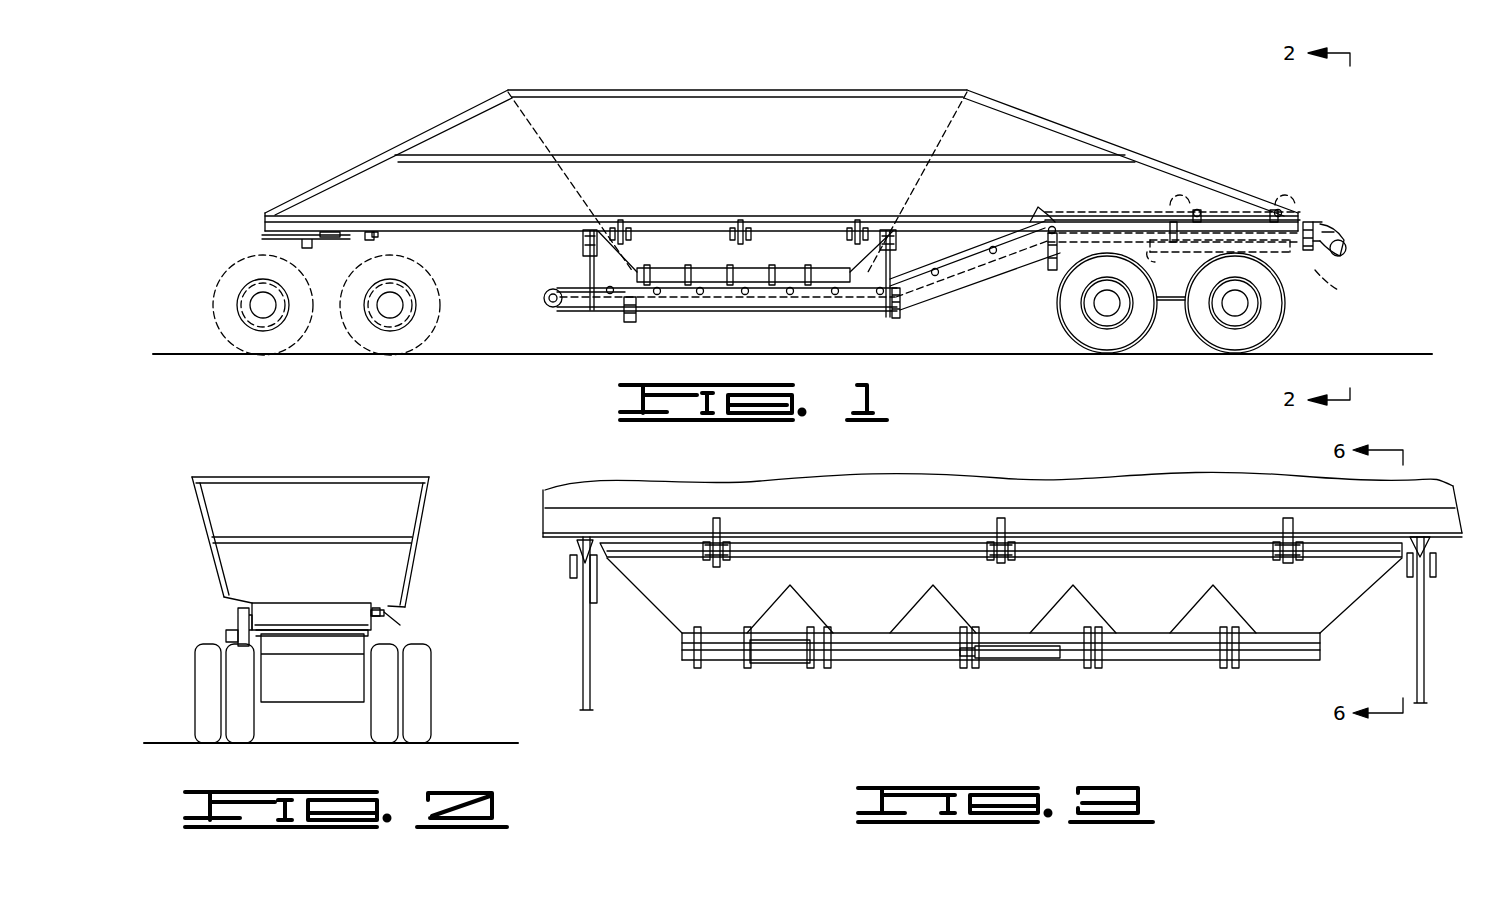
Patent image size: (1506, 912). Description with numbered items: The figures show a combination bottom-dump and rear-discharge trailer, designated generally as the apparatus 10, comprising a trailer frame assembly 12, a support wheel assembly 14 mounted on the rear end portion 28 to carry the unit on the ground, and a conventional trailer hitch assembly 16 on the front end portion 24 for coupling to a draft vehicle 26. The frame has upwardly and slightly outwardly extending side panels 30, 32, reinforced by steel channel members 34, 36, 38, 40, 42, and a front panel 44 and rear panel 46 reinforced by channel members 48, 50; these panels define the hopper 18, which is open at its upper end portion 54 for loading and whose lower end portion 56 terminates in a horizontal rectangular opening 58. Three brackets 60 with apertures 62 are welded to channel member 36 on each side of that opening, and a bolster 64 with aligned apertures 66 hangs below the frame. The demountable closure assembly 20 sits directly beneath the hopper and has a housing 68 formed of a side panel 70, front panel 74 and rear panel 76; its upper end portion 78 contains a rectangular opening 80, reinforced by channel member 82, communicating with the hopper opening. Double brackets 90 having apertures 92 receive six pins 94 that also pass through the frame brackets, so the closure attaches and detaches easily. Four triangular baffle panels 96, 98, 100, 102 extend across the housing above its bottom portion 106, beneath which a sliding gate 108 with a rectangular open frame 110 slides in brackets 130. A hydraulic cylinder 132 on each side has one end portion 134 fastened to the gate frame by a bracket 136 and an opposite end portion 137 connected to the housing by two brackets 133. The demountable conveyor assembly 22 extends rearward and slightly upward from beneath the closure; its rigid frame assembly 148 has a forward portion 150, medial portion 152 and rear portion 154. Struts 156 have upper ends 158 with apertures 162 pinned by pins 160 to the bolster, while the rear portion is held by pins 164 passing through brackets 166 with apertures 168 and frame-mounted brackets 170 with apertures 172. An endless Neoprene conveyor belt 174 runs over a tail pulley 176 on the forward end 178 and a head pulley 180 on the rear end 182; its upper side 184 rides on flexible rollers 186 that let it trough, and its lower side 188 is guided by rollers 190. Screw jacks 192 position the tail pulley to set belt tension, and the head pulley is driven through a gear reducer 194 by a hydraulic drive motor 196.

In FIG. 1, the apparatus 10 is at (789, 201).
In FIG. 2, the apparatus 10 is at (323, 574).
In FIG. 1, the trailer frame assembly 12 is at (490, 235).
In FIG. 2, the trailer frame assembly 12 is at (404, 619).
In FIG. 3, the trailer frame assembly 12 is at (1002, 482).
In FIG. 1, the support wheel assembly 14 is at (1298, 320).
In FIG. 2, the support wheel assembly 14 is at (430, 683).
In FIG. 1, the trailer hitch assembly 16 is at (240, 238).
In FIG. 1, the hopper 18 is at (781, 160).
In FIG. 2, the hopper 18 is at (312, 513).
In FIG. 1, the demountable closure assembly 20 is at (716, 232).
In FIG. 3, the demountable closure assembly 20 is at (1006, 639).
In FIG. 1, the demountable conveyor assembly 22 is at (949, 244).
In FIG. 2, the demountable conveyor assembly 22 is at (302, 626).
In FIG. 1, the front end portion 24 is at (370, 236).
In FIG. 1, the draft vehicle 26 is at (225, 278).
In FIG. 1, the rear end portion 28 is at (1270, 258).
In FIG. 1, the side panel 30 is at (978, 113).
In FIG. 2, the side panel 30 is at (210, 515).
In FIG. 3, the side panel 30 is at (1160, 480).
In FIG. 2, the side panel 32 is at (415, 500).
In FIG. 1, the steel channel member 34 is at (722, 90).
In FIG. 1, the steel channel member 36 is at (790, 222).
In FIG. 3, the steel channel member 36 is at (1118, 508).
In FIG. 1, the steel channel member 38 is at (758, 155).
In FIG. 1, the steel channel member 40 is at (1017, 117).
In FIG. 2, the steel channel member 40 is at (200, 505).
In FIG. 1, the steel channel member 42 is at (452, 122).
In FIG. 1, the front panel 44 is at (548, 118).
In FIG. 1, the rear panel 46 is at (945, 122).
In FIG. 2, the rear panel 46 is at (400, 560).
In FIG. 2, the steel channel member 48 is at (318, 477).
In FIG. 2, the steel channel member 50 is at (320, 537).
In FIG. 1, the upper end portion 54 is at (735, 90).
In FIG. 2, the upper end portion 54 is at (295, 477).
In FIG. 1, the lower end portion 56 is at (672, 222).
In FIG. 3, the lower end portion 56 is at (848, 557).
In FIG. 1, the rectangular opening 58 is at (872, 222).
In FIG. 1, the steel bracket 60 is at (620, 222).
In FIG. 3, the steel bracket 60 is at (718, 518).
In FIG. 3, the aperture 62 is at (722, 545).
In FIG. 1, the bolster 64 is at (585, 232).
In FIG. 3, the bolster 64 is at (580, 545).
In FIG. 3, the aligned apertures 66 is at (585, 545).
In FIG. 1, the housing 68 is at (755, 240).
In FIG. 3, the housing 68 is at (1325, 630).
In FIG. 1, the side panel 70 is at (690, 240).
In FIG. 3, the side panel 70 is at (738, 640).
In FIG. 1, the front panel 74 is at (637, 262).
In FIG. 3, the front panel 74 is at (640, 590).
In FIG. 1, the rear panel 76 is at (848, 252).
In FIG. 3, the rear panel 76 is at (1370, 575).
In FIG. 3, the upper end portion 78 is at (672, 530).
In FIG. 3, the rectangular opening 80 is at (918, 543).
In FIG. 3, the steel channel member 82 is at (890, 557).
In FIG. 1, the double bracket 90 is at (628, 232).
In FIG. 3, the double bracket 90 is at (718, 567).
In FIG. 3, the horizontally aligned apertures 92 is at (705, 555).
In FIG. 3, the pin 94 is at (728, 552).
In FIG. 3, the baffle panel 96 is at (800, 600).
In FIG. 3, the baffle panel 98 is at (955, 600).
In FIG. 3, the baffle panel 100 is at (1095, 605).
In FIG. 3, the baffle panel 102 is at (1235, 605).
In FIG. 3, the bottom portion 106 is at (680, 622).
In FIG. 1, the sliding gate 108 is at (742, 268).
In FIG. 3, the sliding gate 108 is at (862, 663).
In FIG. 3, the rectangular open frame 110 is at (870, 650).
In FIG. 1, the bracket 130 is at (648, 268).
In FIG. 3, the bracket 130 is at (697, 650).
In FIG. 3, the hydraulic cylinder 132 is at (775, 663).
In FIG. 3, the bracket 133 is at (760, 633).
In FIG. 3, the end portion 134 is at (915, 660).
In FIG. 3, the bracket 136 is at (940, 660).
In FIG. 3, the opposite end portion 137 is at (760, 660).
In FIG. 1, the frame assembly 148 is at (715, 312).
In FIG. 1, the forward portion 150 is at (700, 312).
In FIG. 1, the medial portion 152 is at (975, 275).
In FIG. 1, the rear portion 154 is at (1215, 255).
In FIG. 2, the rear portion 154 is at (380, 605).
In FIG. 1, the strut 156 is at (588, 275).
In FIG. 3, the strut 156 is at (583, 650).
In FIG. 3, the upper end 158 is at (577, 590).
In FIG. 3, the pin 160 is at (570, 565).
In FIG. 3, the aperture 162 is at (572, 578).
In FIG. 1, the pin 164 is at (1160, 212).
In FIG. 2, the pin 164 is at (372, 612).
In FIG. 1, the bracket 166 is at (1180, 200).
In FIG. 2, the bracket 166 is at (385, 605).
In FIG. 2, the pin-receiving aperture 168 is at (400, 600).
In FIG. 1, the bracket 170 is at (1155, 245).
In FIG. 2, the bracket 170 is at (398, 615).
In FIG. 2, the pin-receiving aperture 172 is at (400, 605).
In FIG. 1, the conveyor belt 174 is at (885, 260).
In FIG. 2, the conveyor belt 174 is at (300, 605).
In FIG. 1, the tail pulley 176 is at (548, 305).
In FIG. 1, the forward end 178 is at (580, 312).
In FIG. 1, the head pulley 180 is at (1345, 232).
In FIG. 1, the rear end 182 is at (1335, 225).
In FIG. 1, the upper side 184 is at (1000, 222).
In FIG. 1, the flexible rollers 186 is at (610, 294).
In FIG. 1, the lower side 188 is at (830, 312).
In FIG. 1, the rollers 190 is at (630, 322).
In FIG. 1, the screw jack 192 is at (560, 310).
In FIG. 1, the gear reducer 194 is at (1350, 237).
In FIG. 2, the gear reducer 194 is at (238, 648).
In FIG. 1, the hydraulic drive motor 196 is at (1348, 250).
In FIG. 2, the hydraulic drive motor 196 is at (236, 633).